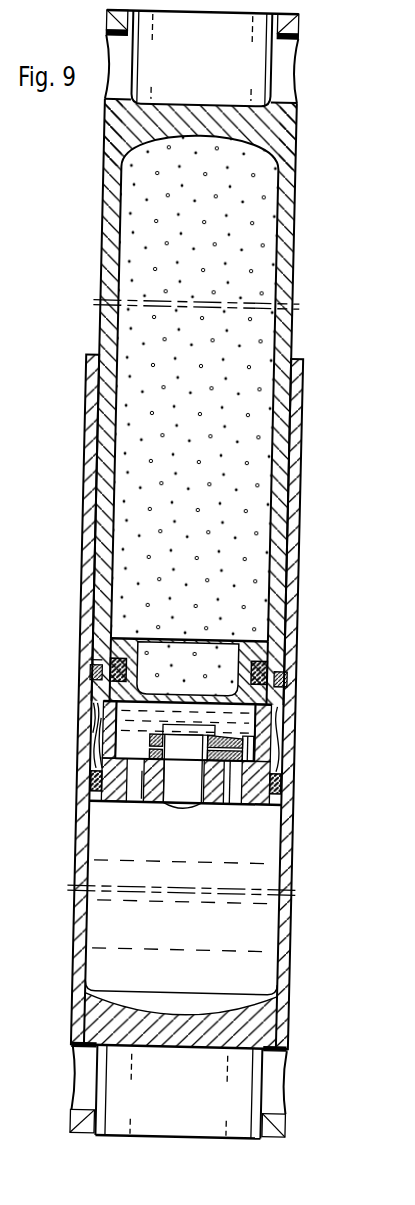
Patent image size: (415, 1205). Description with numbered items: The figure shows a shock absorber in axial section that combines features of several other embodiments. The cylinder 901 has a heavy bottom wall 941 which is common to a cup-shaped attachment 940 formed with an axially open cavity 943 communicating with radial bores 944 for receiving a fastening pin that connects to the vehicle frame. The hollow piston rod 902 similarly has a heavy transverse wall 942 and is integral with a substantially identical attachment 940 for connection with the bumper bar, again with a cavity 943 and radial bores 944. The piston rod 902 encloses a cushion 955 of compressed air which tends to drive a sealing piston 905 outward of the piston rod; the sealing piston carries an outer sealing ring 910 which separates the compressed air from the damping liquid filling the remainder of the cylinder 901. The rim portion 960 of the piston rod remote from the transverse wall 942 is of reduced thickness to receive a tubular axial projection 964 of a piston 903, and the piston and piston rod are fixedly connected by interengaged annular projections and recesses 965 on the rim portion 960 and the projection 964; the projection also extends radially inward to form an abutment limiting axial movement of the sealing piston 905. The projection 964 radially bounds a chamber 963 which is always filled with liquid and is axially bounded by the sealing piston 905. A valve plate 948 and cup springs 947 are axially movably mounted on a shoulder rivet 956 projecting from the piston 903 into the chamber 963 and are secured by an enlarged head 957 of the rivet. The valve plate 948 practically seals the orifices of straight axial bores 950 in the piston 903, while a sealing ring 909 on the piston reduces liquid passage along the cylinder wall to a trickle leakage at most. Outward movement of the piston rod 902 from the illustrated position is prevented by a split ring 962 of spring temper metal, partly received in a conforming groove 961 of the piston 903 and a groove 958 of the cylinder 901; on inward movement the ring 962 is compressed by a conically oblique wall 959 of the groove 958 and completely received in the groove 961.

The cup-shaped attachment 940 is at (298, 53).
The radial bores 944 is at (123, 77).
The axially open cavity 943 is at (281, 90).
The transverse wall 942 is at (232, 127).
The hollow piston rod 902 is at (301, 187).
The cushion of compressed air 955 is at (262, 206).
The sealing piston 905 is at (288, 640).
The enlarged head 957 is at (195, 720).
The outer sealing ring 910 is at (276, 671).
The split ring 962 is at (301, 683).
The groove of the cylinder 958 is at (104, 678).
The groove of the piston 961 is at (112, 661).
The conically oblique wall 959 is at (111, 686).
The rim portion 960 is at (116, 722).
The interengaged annular projections and recesses 965 is at (127, 748).
The sealing ring 909 is at (111, 786).
The tubular axial projection 964 is at (297, 778).
The chamber 963 is at (268, 727).
The cup springs 947 is at (272, 744).
The piston 903 is at (283, 799).
The straight axial bores 950 is at (158, 800).
The shoulder rivet 956 is at (200, 796).
The valve plate 948 is at (246, 803).
The cylinder 901 is at (106, 920).
The bottom wall 941 is at (141, 1027).